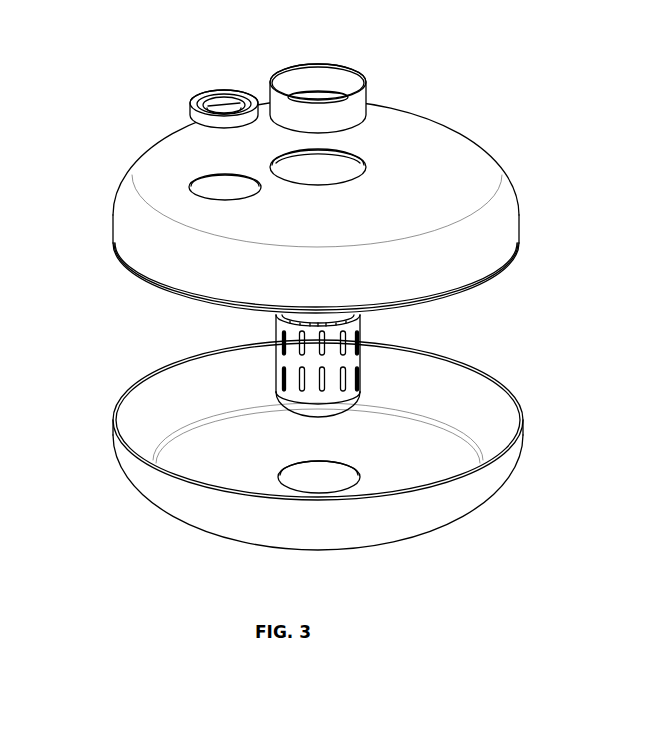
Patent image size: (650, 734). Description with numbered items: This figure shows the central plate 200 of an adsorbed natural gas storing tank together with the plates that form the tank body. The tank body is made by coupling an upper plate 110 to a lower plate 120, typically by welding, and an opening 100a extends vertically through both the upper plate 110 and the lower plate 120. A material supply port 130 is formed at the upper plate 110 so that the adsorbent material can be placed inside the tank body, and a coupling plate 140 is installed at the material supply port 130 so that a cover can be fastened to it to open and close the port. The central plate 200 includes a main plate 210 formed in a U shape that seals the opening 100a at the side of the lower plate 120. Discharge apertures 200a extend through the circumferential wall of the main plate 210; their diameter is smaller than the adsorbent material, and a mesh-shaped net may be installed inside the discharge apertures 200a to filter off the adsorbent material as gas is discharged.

The upper plate 110 is at (128, 224).
The lower plate 120 is at (128, 456).
The material supply port 130 is at (214, 176).
The coupling plate 140 is at (211, 96).
The opening 100a is at (322, 165).
The central plate 200 is at (316, 72).
The discharge aperture 200a is at (343, 380).
The main plate 210 is at (298, 367).